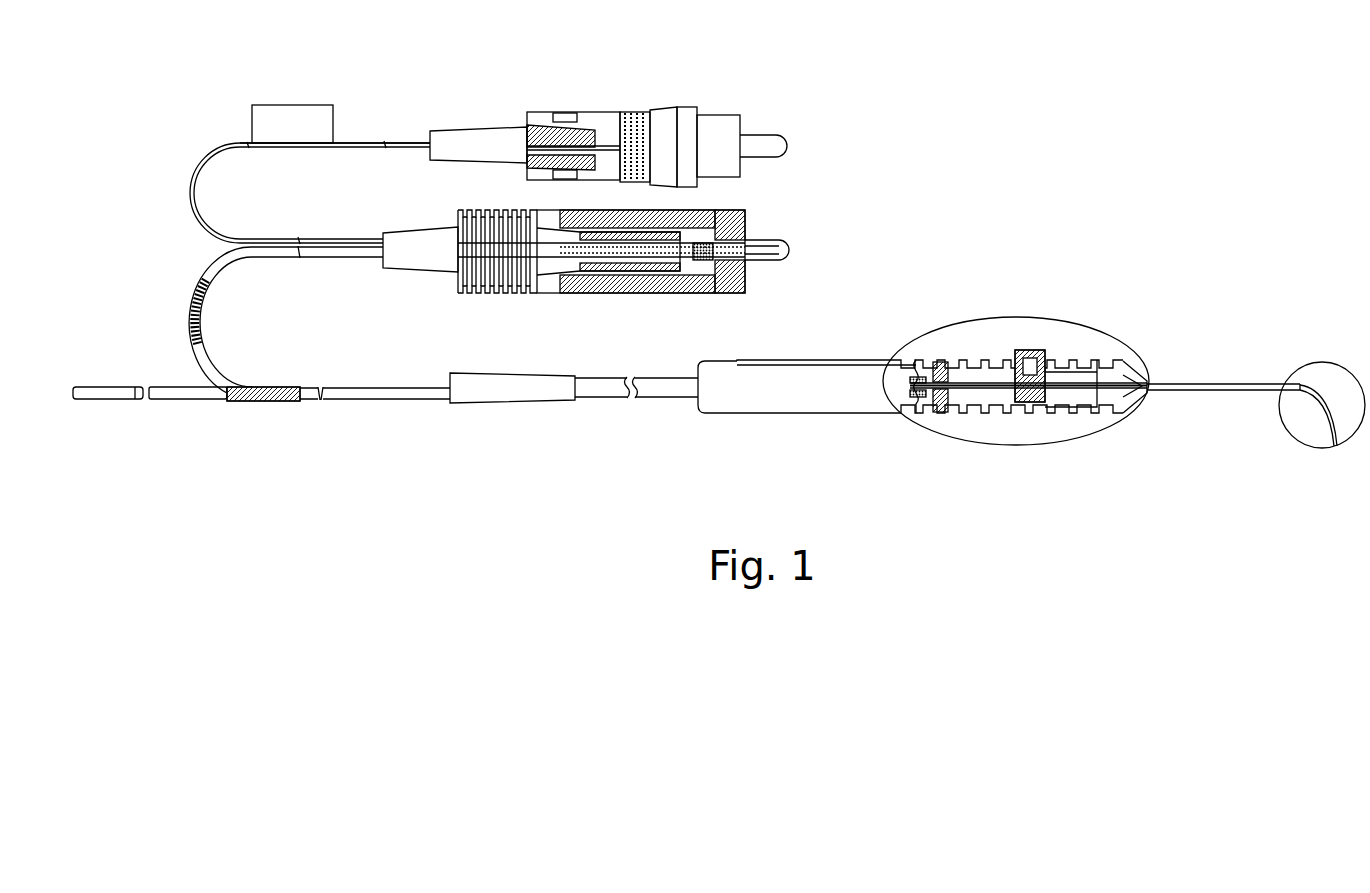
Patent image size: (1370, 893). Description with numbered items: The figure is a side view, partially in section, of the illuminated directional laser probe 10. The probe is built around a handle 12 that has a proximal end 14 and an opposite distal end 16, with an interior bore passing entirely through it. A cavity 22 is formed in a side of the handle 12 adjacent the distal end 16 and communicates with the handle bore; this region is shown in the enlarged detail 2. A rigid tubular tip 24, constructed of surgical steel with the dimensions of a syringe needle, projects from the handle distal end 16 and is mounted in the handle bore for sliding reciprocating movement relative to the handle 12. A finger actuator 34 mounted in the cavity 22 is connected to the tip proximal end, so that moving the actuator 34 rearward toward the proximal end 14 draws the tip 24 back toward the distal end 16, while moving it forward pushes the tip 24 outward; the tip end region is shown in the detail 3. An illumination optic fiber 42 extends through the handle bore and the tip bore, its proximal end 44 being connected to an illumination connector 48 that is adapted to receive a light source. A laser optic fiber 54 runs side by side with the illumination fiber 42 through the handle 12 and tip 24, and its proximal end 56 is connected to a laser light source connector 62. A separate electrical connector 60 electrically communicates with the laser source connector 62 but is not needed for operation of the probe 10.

The illuminated directional laser probe 10 is at (976, 185).
The electrical connector 60 is at (662, 118).
The laser optic fiber 54 is at (758, 247).
The proximal end of the laser optic fiber 56 is at (788, 249).
The laser light source connector 62 is at (726, 293).
The enlarged detail region 2 is at (1108, 333).
The finger actuator 34 is at (1020, 350).
The cavity 22 is at (1073, 370).
The handle 12 is at (803, 400).
The proximal end of the handle 14 is at (697, 406).
The distal end of the handle 16 is at (1137, 402).
The rigid tubular tip 24 is at (1194, 382).
The fiber tip detail region 3 is at (1321, 362).
The proximal end of the illumination optic fiber 44 is at (77, 389).
The illumination optic fiber 42 is at (129, 395).
The illumination connector 48 is at (172, 399).